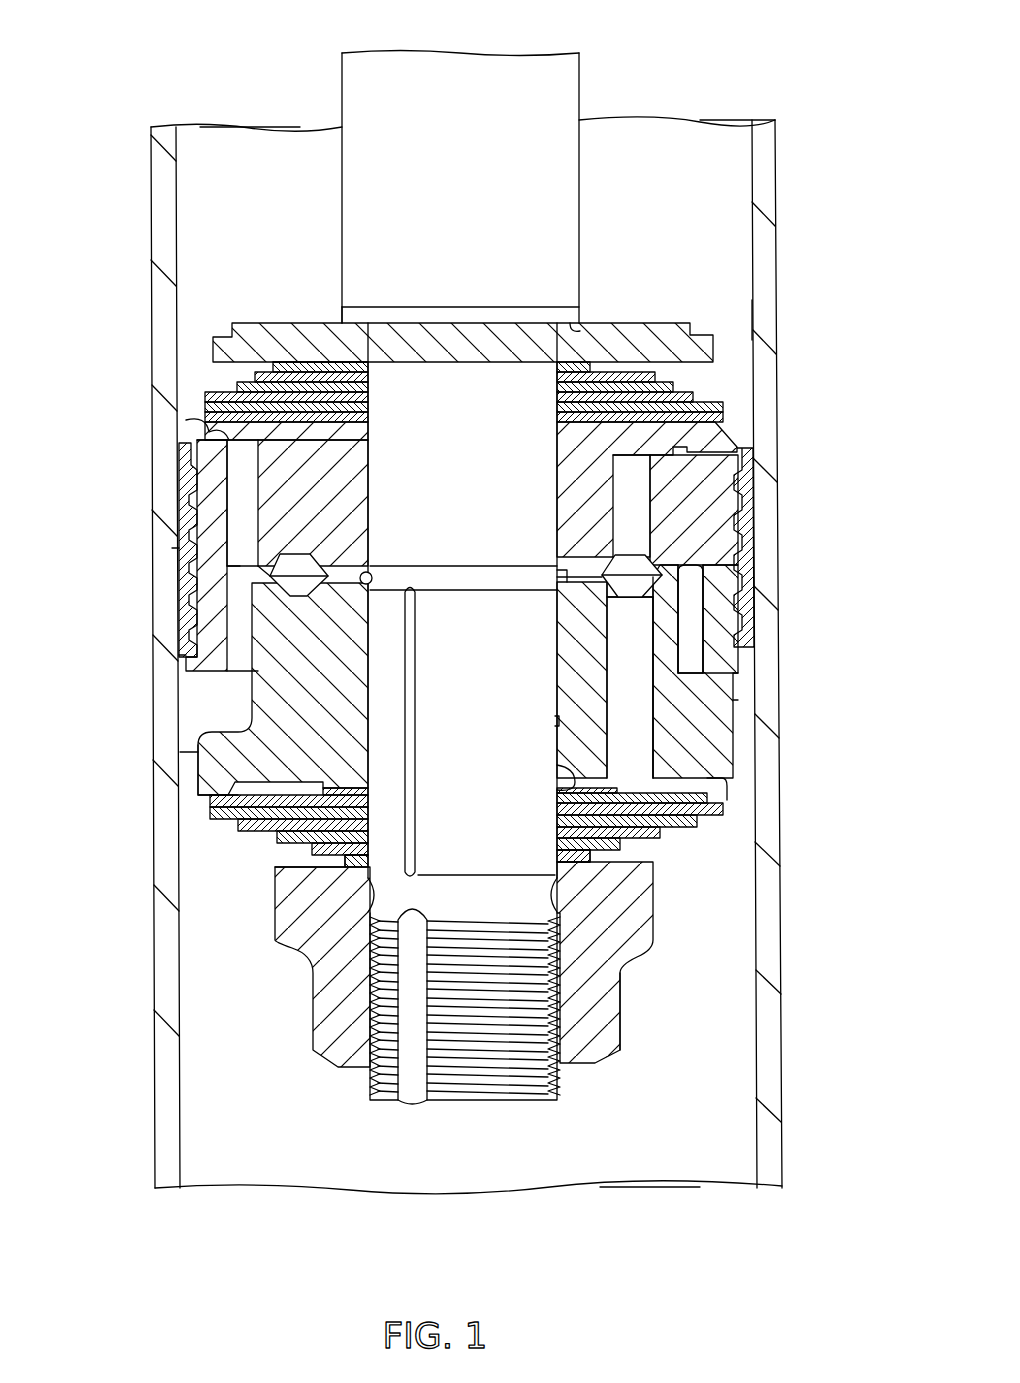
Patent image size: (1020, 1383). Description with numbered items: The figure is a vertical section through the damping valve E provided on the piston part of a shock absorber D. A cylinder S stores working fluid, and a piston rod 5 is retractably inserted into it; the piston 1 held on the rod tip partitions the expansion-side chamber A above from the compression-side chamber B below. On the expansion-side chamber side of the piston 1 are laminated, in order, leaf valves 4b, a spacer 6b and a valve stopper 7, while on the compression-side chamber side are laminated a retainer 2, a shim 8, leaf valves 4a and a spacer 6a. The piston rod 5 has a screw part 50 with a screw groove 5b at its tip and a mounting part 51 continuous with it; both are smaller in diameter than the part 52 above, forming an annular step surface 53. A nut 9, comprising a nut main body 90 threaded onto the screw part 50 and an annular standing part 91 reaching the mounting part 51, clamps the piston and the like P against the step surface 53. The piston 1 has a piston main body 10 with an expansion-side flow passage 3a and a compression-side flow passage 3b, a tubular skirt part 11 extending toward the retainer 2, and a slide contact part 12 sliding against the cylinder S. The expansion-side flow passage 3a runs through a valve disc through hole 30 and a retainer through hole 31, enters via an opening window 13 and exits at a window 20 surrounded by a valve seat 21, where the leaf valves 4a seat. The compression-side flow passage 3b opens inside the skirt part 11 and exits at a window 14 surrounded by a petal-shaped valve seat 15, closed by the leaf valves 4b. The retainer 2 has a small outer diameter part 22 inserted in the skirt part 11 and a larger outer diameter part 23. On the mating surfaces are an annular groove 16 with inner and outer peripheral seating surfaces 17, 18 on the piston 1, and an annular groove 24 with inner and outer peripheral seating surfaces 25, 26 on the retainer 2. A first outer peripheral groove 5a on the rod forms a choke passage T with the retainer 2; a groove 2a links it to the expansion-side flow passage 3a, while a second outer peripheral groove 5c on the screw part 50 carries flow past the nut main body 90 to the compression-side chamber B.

The piston 1 is at (178, 655).
The retainer 2 is at (196, 752).
The groove 2a is at (565, 565).
The expansion-side flow passage 3a is at (653, 612).
The compression-side flow passage 3b is at (260, 520).
The leaf valves 4a is at (620, 845).
The leaf valves 4b is at (205, 408).
The piston rod 5 is at (598, 147).
The first outer peripheral groove 5a is at (557, 652).
The screw groove 5b is at (525, 1078).
The second outer peripheral groove 5c is at (415, 1088).
The spacer 6a is at (565, 850).
The spacer 6b is at (370, 372).
The valve stopper 7 is at (238, 322).
The shim 8 is at (560, 770).
The nut 9 is at (471, 979).
The piston main body 10 is at (320, 487).
The skirt part 11 is at (258, 665).
The slide contact part 12 is at (190, 510).
The opening window 13 is at (720, 432).
The window 14 is at (283, 440).
The valve seat 15 is at (200, 428).
The annular groove 16 is at (605, 525).
The inner peripheral seating surface 17 is at (368, 585).
The outer peripheral seating surface 18 is at (228, 570).
The window 20 is at (733, 725).
The valve seat 21 is at (727, 772).
The small outer diameter part 22 is at (200, 765).
The larger outer diameter part 23 is at (207, 800).
The annular groove 24 is at (565, 600).
The inner peripheral seating surface 25 is at (365, 562).
The outer peripheral seating surface 26 is at (700, 556).
The valve disc through hole 30 is at (640, 496).
The retainer through hole 31 is at (653, 690).
The screw part 50 is at (342, 1067).
The mounting part 51 is at (290, 870).
The part 52 is at (565, 225).
The step surface 53 is at (583, 325).
The nut main body 90 is at (610, 1010).
The standing part 91 is at (640, 912).
The expansion-side chamber A is at (238, 192).
The compression-side chamber B is at (703, 1162).
The shock absorber D is at (716, 100).
The damping valve E is at (808, 330).
The piston and the like P is at (172, 550).
The cylinder S is at (160, 1158).
The passage T is at (555, 720).